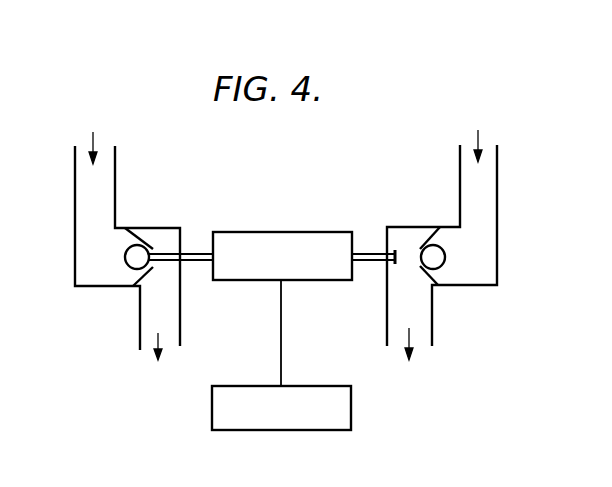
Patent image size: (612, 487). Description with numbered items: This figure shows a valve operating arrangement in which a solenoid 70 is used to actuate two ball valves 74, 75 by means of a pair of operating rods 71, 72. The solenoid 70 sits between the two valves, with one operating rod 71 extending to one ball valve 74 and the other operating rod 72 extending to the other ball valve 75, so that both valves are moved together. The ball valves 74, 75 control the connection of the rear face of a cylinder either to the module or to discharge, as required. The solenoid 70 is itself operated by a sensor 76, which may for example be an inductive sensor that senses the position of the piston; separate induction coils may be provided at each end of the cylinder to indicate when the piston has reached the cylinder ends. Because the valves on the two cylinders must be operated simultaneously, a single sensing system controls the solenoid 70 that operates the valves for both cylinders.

The solenoid 70 is at (272, 232).
The operating rod 71 is at (198, 237).
The operating rod 72 is at (363, 250).
The ball valve 74 is at (139, 220).
The ball valve 75 is at (425, 208).
The sensor 76 is at (352, 410).